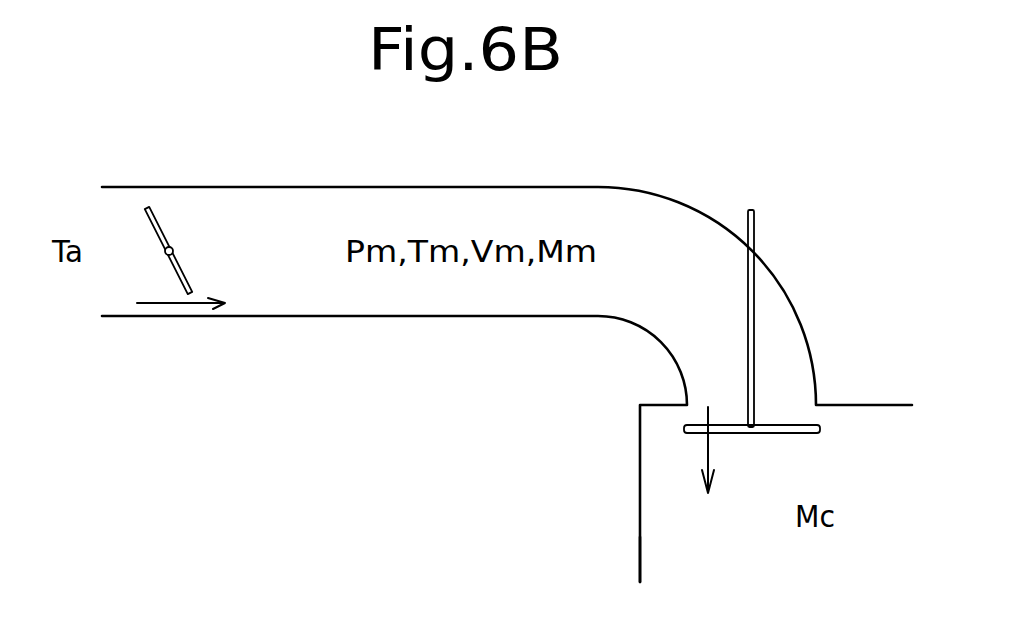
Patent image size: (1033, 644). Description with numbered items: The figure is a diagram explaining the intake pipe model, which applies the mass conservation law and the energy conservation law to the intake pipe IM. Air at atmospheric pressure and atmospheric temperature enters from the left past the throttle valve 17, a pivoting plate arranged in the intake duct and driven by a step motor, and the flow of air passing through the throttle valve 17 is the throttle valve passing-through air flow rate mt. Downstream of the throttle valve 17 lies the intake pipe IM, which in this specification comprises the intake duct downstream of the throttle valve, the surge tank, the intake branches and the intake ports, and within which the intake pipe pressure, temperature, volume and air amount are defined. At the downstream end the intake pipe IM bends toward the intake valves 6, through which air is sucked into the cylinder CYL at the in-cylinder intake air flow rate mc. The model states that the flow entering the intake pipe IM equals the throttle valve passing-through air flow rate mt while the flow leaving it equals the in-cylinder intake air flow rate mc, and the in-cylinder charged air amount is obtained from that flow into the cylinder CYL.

The throttle valve 17 is at (157, 217).
The intake valves 6 is at (757, 375).
The intake pipe IM is at (457, 318).
The cylinder CYL is at (640, 537).
The throttle valve passing-through air flow rate mt is at (177, 304).
The in-cylinder intake air flow rate mc is at (708, 450).